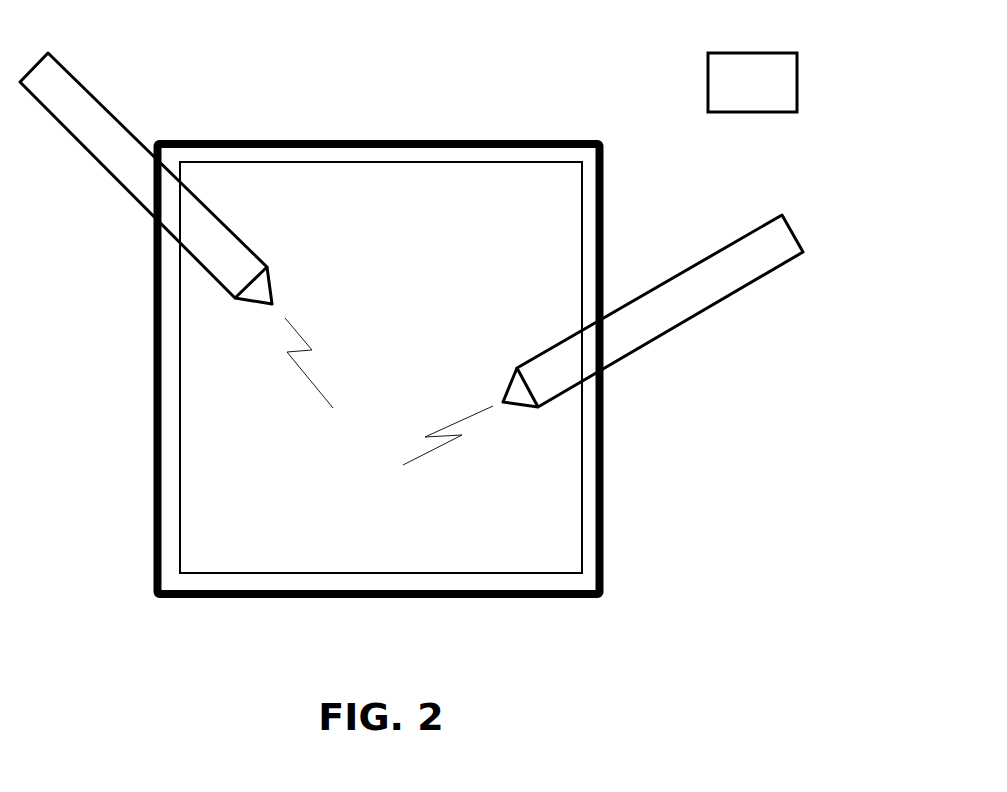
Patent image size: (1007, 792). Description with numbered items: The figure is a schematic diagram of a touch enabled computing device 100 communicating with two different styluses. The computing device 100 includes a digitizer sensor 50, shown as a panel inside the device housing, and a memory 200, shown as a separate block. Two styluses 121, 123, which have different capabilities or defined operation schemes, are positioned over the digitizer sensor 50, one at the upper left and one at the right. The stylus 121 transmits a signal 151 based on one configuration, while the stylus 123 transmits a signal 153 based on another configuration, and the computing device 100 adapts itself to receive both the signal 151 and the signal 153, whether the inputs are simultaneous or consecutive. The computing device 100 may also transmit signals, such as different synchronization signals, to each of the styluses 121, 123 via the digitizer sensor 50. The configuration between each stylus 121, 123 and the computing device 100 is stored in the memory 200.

The touch enabled computing device 100 is at (345, 104).
The digitizer sensor 50 is at (547, 217).
The memory 200 is at (797, 68).
The stylus 121 is at (107, 101).
The stylus 123 is at (692, 267).
The signal 151 is at (317, 387).
The signal 153 is at (463, 422).